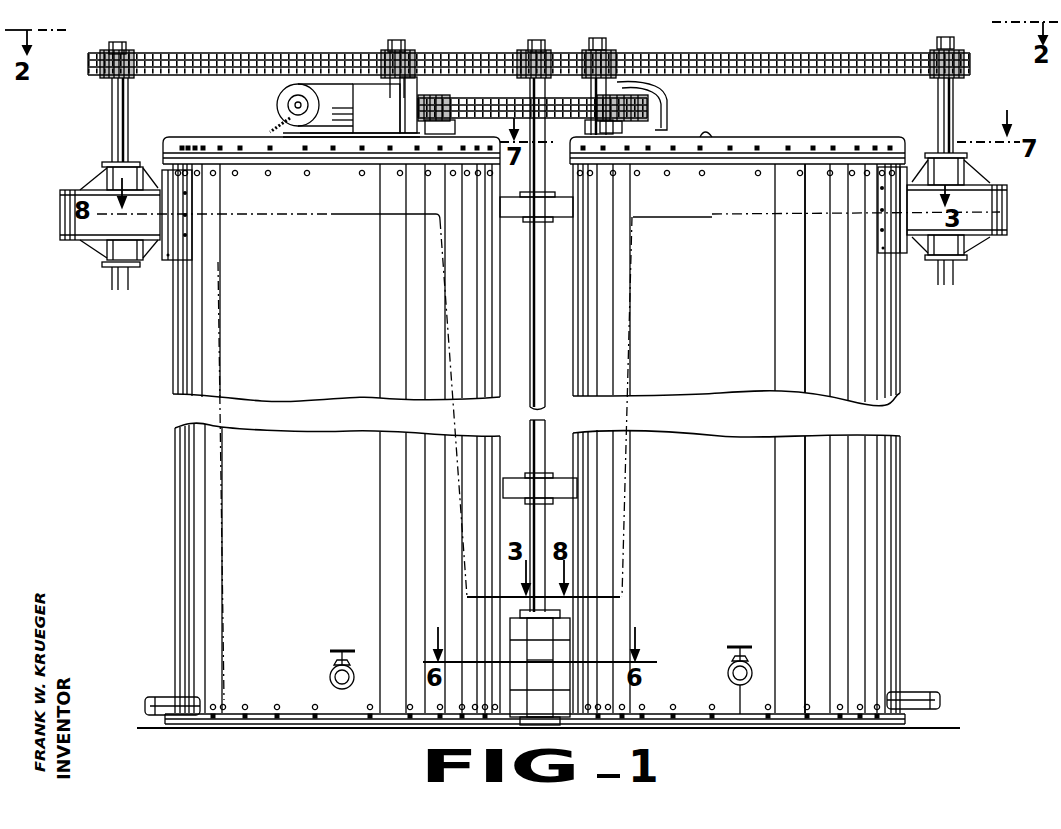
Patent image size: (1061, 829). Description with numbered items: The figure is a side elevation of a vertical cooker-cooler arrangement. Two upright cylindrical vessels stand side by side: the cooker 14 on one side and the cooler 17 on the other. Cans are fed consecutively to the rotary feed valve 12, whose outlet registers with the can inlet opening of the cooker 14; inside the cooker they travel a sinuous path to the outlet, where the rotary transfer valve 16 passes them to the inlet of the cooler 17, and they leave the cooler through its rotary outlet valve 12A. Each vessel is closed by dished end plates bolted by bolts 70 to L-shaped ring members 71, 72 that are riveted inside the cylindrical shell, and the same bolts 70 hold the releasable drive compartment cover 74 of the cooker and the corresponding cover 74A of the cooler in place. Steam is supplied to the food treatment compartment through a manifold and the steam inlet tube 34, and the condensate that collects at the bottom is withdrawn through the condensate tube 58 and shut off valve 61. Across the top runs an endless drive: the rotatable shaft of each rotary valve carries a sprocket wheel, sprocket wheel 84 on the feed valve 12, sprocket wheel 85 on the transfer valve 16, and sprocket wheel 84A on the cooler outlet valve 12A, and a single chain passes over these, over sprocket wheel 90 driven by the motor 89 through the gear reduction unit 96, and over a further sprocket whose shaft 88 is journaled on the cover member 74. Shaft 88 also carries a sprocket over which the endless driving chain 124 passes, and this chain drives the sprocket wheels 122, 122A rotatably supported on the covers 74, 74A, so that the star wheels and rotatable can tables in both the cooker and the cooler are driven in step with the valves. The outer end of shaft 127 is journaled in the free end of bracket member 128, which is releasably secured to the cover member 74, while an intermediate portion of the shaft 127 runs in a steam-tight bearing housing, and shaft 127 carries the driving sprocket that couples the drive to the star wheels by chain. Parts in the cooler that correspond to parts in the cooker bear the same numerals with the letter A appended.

The rotary feed valve 12 is at (987, 233).
The rotary outlet valve 12A is at (95, 225).
The cooker 14 is at (867, 352).
The rotary transfer valve 16 is at (563, 693).
The cooler 17 is at (210, 320).
The steam inlet tube 34 is at (912, 692).
The condensate tube 58 is at (738, 714).
The shut off valve 61 is at (727, 673).
The bolts 70 is at (792, 137).
The L-shaped ring member 71 is at (720, 140).
The L-shaped ring member 72 is at (830, 722).
The drive compartment cover 74 is at (747, 137).
The drive compartment cover 74A is at (230, 137).
The sprocket wheel 84 is at (963, 50).
The sprocket wheel 84A is at (132, 52).
The sprocket wheel 85 is at (547, 43).
The shaft 88 is at (597, 45).
The motor 89 is at (284, 100).
The sprocket wheel 90 is at (410, 47).
The gear reduction unit 96 is at (372, 118).
The sprocket wheel 122 is at (648, 112).
The sprocket wheel 122A is at (427, 97).
The endless driving chain 124 is at (507, 96).
The shaft 127 is at (617, 80).
The bracket member 128 is at (650, 97).